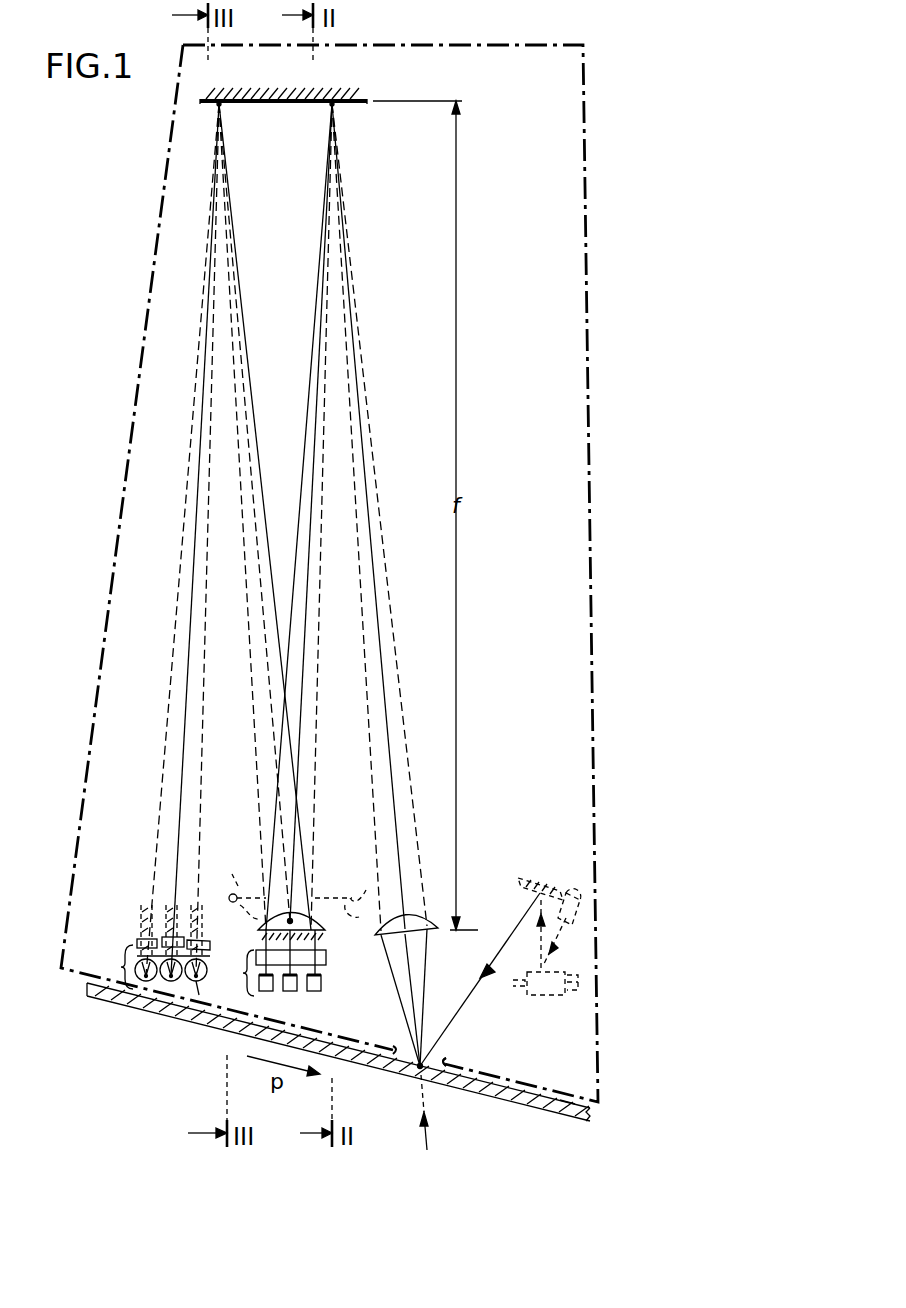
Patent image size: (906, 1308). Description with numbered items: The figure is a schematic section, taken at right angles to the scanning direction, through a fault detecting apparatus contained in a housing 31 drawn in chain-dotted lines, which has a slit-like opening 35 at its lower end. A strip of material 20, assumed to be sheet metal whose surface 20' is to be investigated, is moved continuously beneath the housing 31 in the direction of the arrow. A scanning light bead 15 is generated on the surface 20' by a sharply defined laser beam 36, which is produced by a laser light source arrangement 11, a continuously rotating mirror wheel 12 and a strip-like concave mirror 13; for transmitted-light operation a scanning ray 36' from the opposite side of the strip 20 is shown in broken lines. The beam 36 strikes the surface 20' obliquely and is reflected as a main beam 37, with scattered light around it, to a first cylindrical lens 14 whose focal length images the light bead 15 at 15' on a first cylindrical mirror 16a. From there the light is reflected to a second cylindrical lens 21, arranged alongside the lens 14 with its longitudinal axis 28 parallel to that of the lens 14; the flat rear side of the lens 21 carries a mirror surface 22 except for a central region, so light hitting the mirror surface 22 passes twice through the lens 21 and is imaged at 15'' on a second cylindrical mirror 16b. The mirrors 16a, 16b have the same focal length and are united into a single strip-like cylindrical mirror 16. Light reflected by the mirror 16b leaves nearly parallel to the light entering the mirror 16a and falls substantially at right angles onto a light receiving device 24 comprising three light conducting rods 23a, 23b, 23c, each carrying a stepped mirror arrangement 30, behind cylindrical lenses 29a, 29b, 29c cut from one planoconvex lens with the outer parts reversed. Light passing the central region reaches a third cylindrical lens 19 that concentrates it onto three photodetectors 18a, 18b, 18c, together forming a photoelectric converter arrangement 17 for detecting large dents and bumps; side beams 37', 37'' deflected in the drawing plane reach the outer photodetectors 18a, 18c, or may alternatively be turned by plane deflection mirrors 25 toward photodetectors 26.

The laser light source arrangement 11 is at (571, 884).
The continuously rotating mirror wheel 12 is at (548, 994).
The strip-like concave mirror 13 is at (524, 879).
The first cylindrical lens 14 is at (410, 915).
The scanning light bead 15 is at (397, 1084).
The image of the scanning light bead 15' is at (346, 516).
The second image of the scanning light bead 15'' is at (228, 538).
The striplike cylindrical mirror 16 is at (263, 98).
The first cylindrical mirror 16a is at (350, 104).
The second cylindrical mirror 16b is at (215, 104).
The photoelectric converter arrangement 17 is at (242, 973).
The photodetector 18a is at (268, 990).
The photodetector 18b is at (296, 992).
The photodetector 18c is at (322, 991).
The third cylindrical lens 19 is at (326, 958).
The strip of material 20 is at (338, 1060).
The surface of the sheet metal 20' is at (557, 1131).
The second cylindrical lens 21 is at (322, 932).
The mirror surface 22 is at (279, 905).
The light conducting rod 23a is at (132, 982).
The light conducting rod 23b is at (160, 985).
The light conducting rod 23c is at (178, 988).
The light receiving device 24 is at (153, 966).
The plane deflection mirrors 25 is at (336, 917).
The photodetectors 26 is at (348, 892).
The longitudinal axis of the second cylindrical lens 28 is at (296, 904).
The cylindrical lens 29a is at (146, 935).
The cylindrical lens 29b is at (170, 937).
The cylindrical lens 29c is at (196, 935).
The stepped mirror arrangement 30 is at (201, 995).
The housing 31 is at (141, 377).
The opening 35 is at (448, 1064).
The laser beam 36 is at (480, 975).
The scanning ray 36' is at (404, 1121).
The main beam 37 is at (438, 1000).
The deflected side beam 37' is at (391, 1000).
The deflected side beam 37'' is at (447, 997).